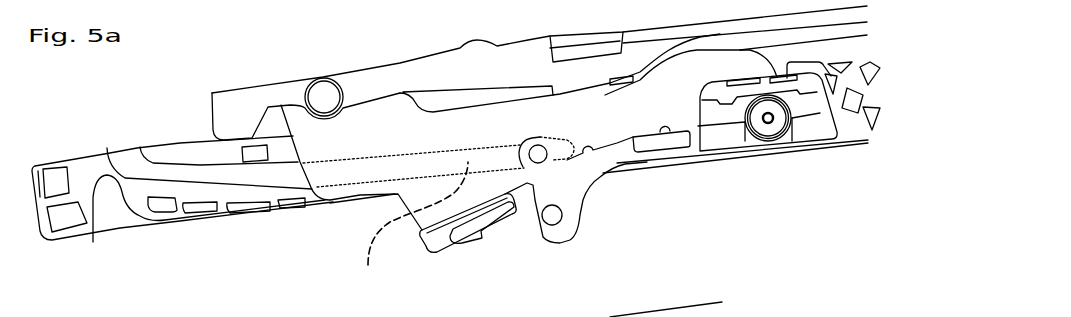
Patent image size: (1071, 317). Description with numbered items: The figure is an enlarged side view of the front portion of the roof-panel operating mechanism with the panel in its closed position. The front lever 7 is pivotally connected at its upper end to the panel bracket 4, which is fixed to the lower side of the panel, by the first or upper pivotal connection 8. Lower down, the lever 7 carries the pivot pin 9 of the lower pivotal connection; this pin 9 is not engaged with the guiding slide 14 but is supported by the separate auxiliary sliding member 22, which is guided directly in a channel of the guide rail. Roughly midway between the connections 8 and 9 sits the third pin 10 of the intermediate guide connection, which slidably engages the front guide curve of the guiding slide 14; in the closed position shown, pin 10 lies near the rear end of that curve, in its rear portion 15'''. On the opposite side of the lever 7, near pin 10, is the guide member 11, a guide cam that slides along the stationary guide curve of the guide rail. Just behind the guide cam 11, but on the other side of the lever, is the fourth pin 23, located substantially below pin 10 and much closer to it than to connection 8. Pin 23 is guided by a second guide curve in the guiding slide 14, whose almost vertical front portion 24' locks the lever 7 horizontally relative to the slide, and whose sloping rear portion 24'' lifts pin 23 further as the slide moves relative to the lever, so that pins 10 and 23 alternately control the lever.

The panel bracket 4 is at (413, 77).
The lever 7 is at (633, 118).
The first or upper pivotal connection 8 is at (322, 96).
The pivot pin 9 is at (768, 130).
The third pin 10 is at (539, 153).
The guide member 11 is at (500, 226).
The guiding slide 14 is at (215, 218).
The rear portion of front guide curve 15''' is at (404, 229).
The auxiliary sliding member 22 is at (825, 128).
The pin 23 is at (556, 216).
The front portion of guide curve 24' is at (199, 233).
The sloping rear portion of guide curve 24'' is at (209, 220).